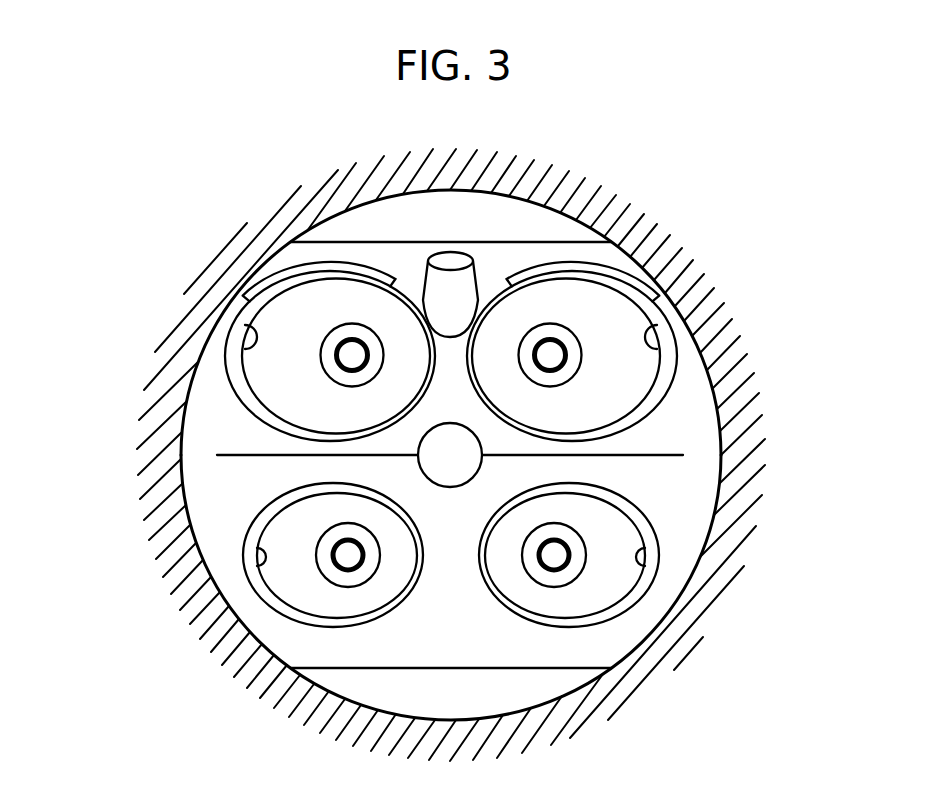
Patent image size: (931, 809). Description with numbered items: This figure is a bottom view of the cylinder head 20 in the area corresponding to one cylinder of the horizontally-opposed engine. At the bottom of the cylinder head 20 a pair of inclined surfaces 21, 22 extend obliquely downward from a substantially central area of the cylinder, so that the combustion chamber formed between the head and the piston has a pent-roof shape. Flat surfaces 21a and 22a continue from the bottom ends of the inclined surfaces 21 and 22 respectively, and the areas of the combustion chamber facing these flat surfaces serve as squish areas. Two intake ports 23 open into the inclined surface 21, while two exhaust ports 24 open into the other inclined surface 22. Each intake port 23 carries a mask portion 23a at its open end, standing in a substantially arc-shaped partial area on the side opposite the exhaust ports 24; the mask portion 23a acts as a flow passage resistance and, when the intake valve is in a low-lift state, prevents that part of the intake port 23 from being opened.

The cylinder head 20 is at (157, 465).
The inclined surface 21 is at (687, 407).
The flat surface 21a is at (537, 203).
The inclined surface 22 is at (683, 500).
The flat surface 22a is at (522, 693).
The intake port 23 is at (245, 350).
The mask portion 23a is at (302, 268).
The exhaust port 24 is at (248, 573).